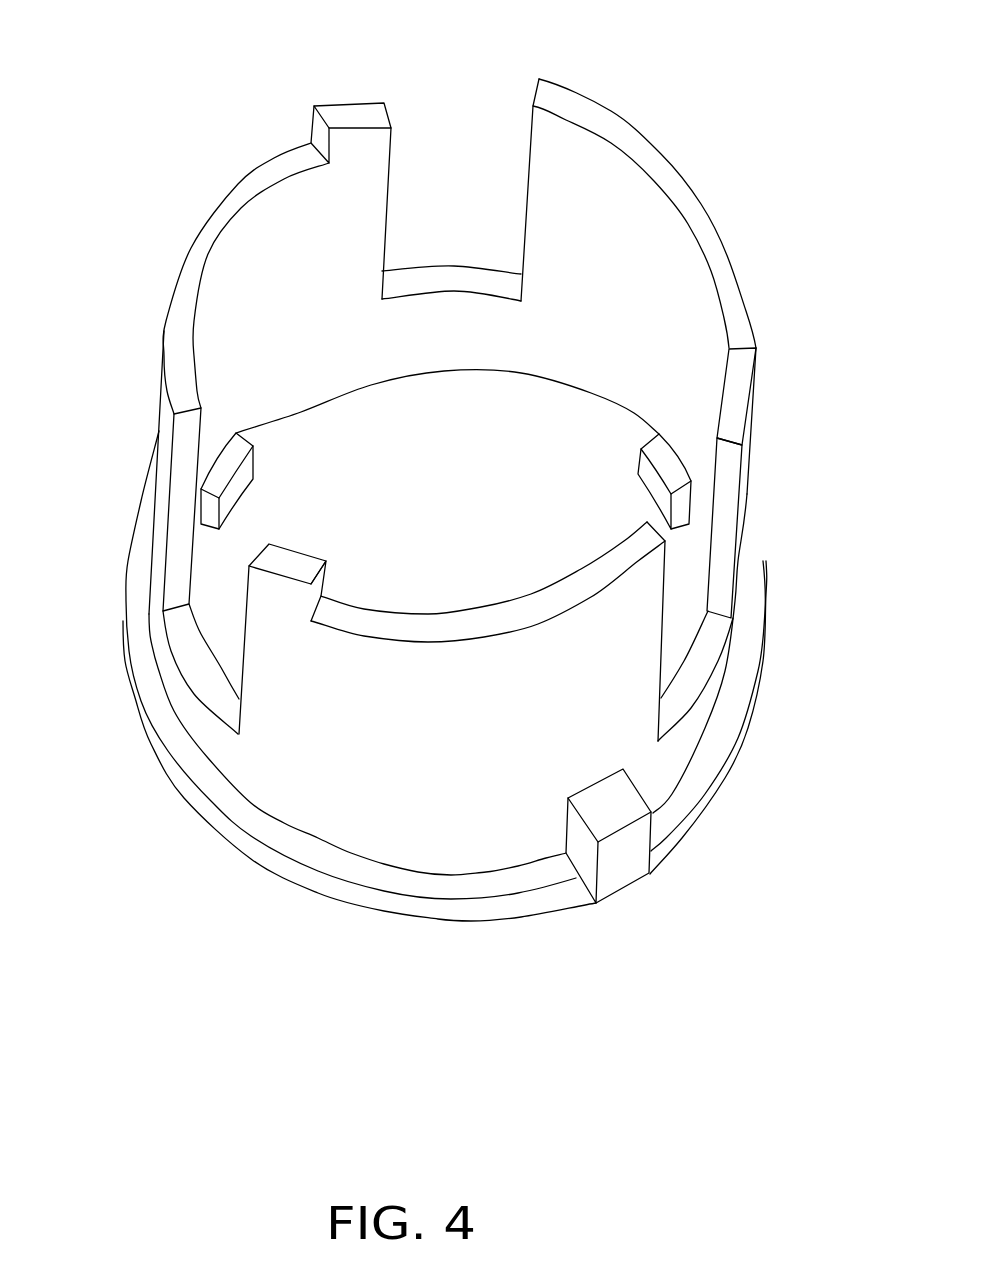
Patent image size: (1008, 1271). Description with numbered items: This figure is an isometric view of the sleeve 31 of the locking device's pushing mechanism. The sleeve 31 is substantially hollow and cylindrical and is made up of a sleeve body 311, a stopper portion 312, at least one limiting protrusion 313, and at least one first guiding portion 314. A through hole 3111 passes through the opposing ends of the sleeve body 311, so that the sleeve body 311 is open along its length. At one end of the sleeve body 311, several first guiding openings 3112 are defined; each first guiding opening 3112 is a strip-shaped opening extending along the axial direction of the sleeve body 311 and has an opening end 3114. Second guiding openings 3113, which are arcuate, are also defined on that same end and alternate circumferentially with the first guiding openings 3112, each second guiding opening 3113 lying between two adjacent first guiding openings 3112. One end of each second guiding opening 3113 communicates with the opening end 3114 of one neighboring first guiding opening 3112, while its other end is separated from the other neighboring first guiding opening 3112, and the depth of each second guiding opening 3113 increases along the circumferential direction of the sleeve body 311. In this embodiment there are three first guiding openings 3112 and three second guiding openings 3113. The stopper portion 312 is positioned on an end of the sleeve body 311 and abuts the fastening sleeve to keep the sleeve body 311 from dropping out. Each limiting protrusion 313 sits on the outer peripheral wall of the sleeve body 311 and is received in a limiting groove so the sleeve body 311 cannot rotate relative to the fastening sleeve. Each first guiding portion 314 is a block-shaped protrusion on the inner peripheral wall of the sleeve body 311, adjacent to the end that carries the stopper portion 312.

The sleeve 31 is at (490, 27).
The sleeve body 311 is at (612, 697).
The stopper portion 312 is at (378, 877).
The limiting protrusion 313 is at (639, 857).
The first guiding portion 314 is at (227, 468).
The through hole 3111 is at (568, 440).
The first guiding opening 3112 is at (484, 173).
The second guiding opening 3113 is at (240, 190).
The opening end 3114 is at (435, 122).